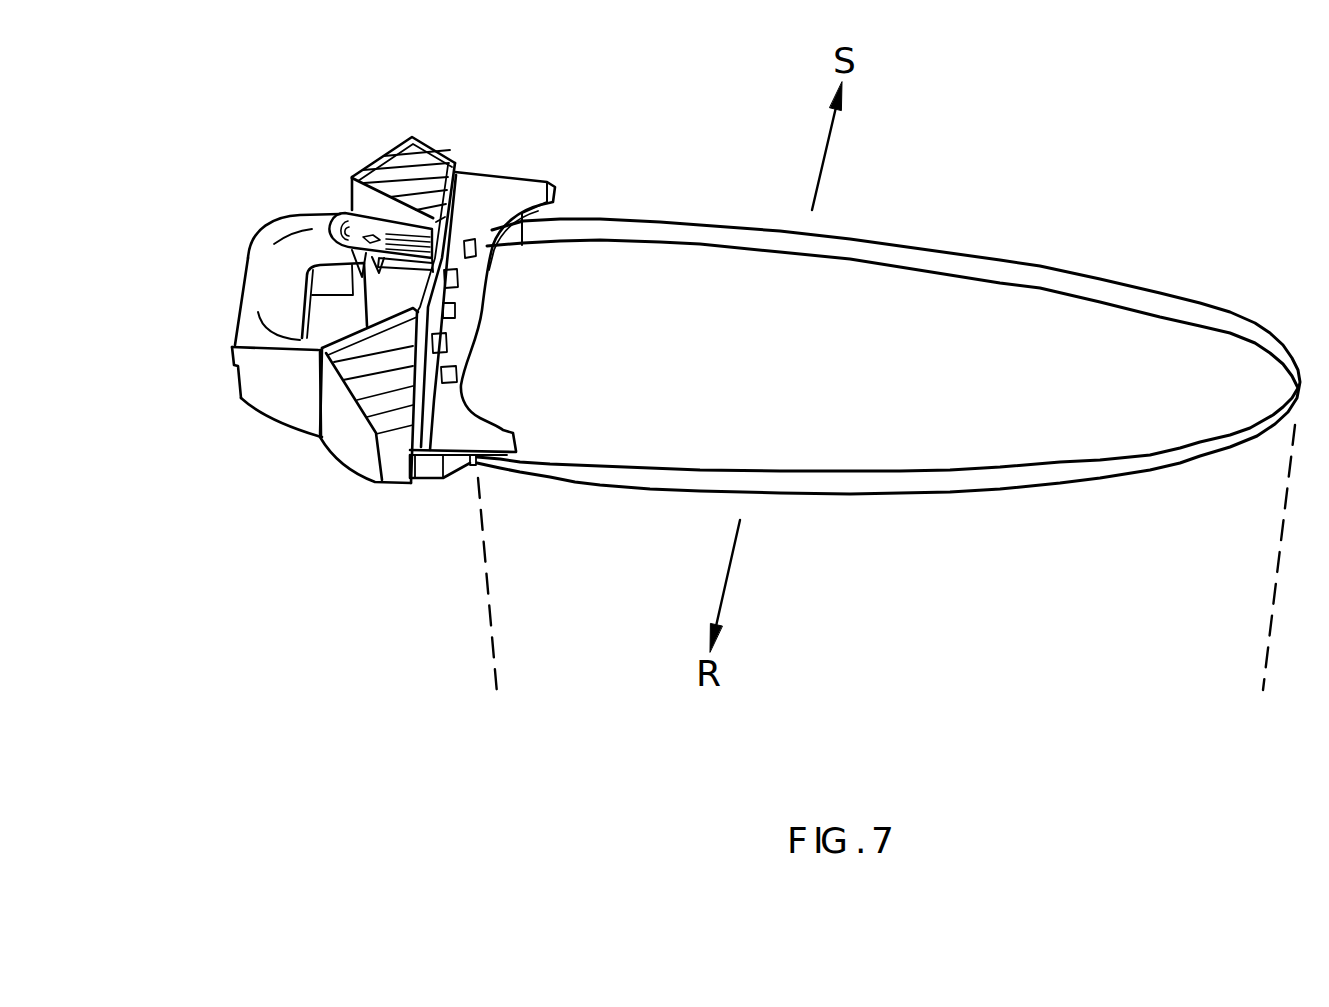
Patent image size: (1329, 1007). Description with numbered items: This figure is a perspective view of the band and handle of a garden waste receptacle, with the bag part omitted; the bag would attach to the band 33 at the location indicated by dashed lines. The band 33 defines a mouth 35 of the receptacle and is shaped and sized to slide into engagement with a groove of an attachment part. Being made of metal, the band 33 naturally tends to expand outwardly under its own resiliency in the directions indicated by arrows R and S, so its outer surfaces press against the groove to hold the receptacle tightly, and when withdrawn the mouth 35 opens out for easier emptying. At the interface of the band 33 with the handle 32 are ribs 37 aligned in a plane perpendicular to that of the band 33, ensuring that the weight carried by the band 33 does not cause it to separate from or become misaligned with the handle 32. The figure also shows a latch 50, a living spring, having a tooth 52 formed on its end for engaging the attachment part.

The handle 32 is at (268, 285).
The band 33 is at (1022, 278).
The mouth 35 is at (1109, 356).
The ribs 37 is at (427, 167).
The latch 50 is at (352, 230).
The tooth 52 is at (476, 265).